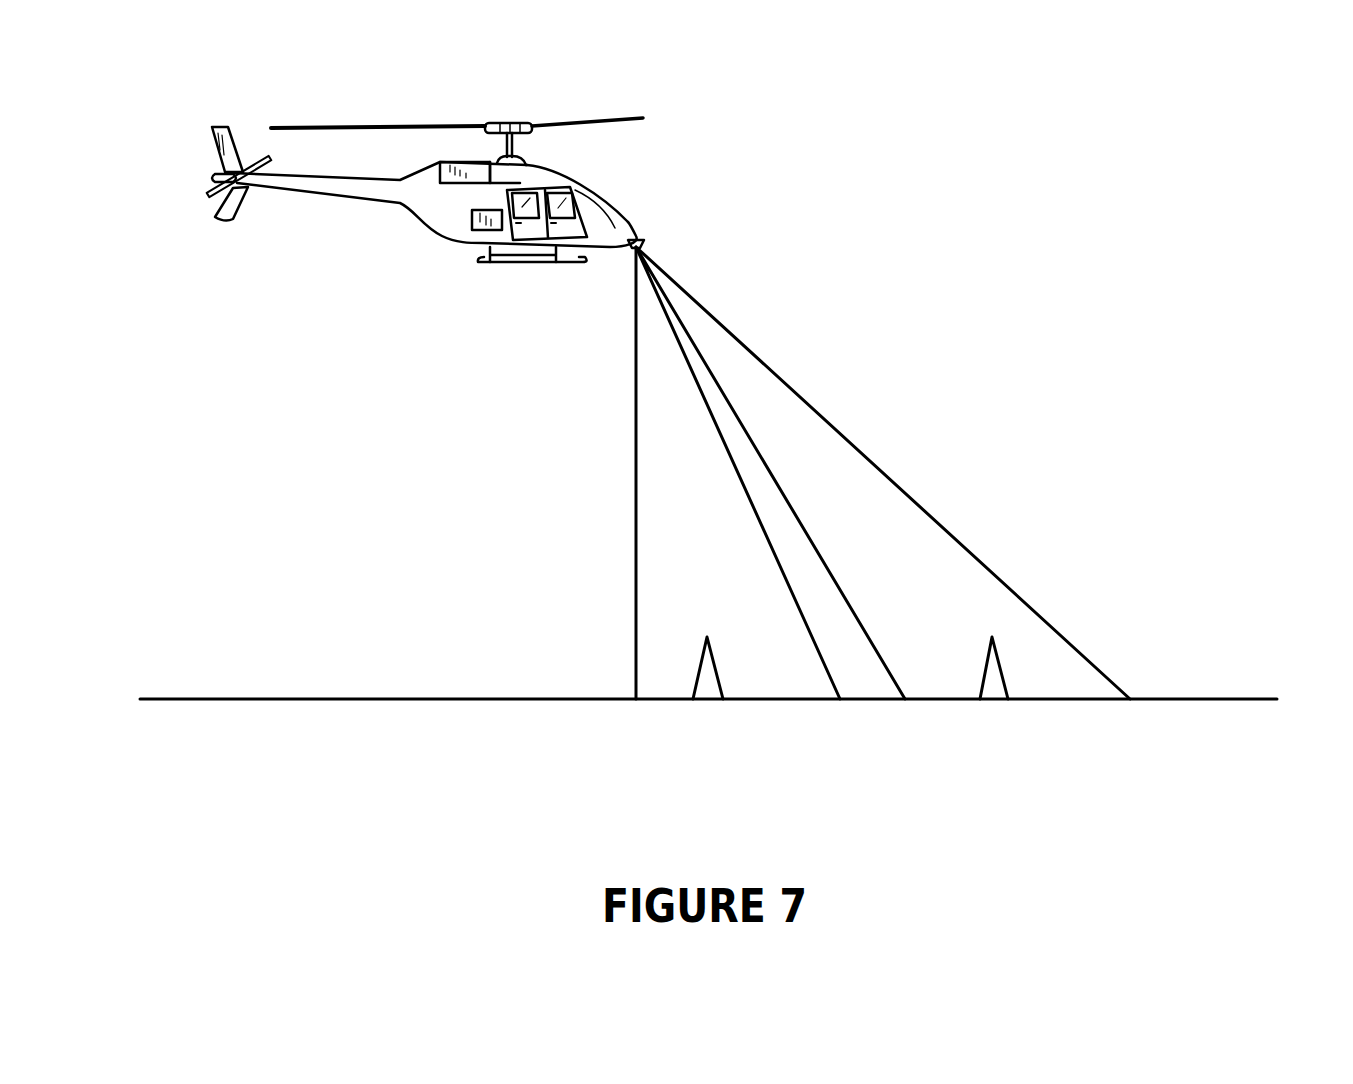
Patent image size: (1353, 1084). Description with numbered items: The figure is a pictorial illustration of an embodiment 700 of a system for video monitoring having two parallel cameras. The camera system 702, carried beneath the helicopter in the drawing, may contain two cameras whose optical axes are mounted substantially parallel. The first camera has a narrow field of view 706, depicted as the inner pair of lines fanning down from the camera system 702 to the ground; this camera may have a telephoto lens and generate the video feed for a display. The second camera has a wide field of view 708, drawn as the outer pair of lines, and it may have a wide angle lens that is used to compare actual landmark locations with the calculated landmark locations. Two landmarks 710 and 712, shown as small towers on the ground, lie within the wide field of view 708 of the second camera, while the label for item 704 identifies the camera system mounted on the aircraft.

The embodiment 700 is at (510, 715).
The camera system 702 is at (637, 218).
The camera system 704 is at (640, 243).
The narrow field of view 706 is at (858, 620).
The wide field of view 708 is at (822, 417).
The landmark 710 is at (992, 637).
The landmark 712 is at (707, 637).